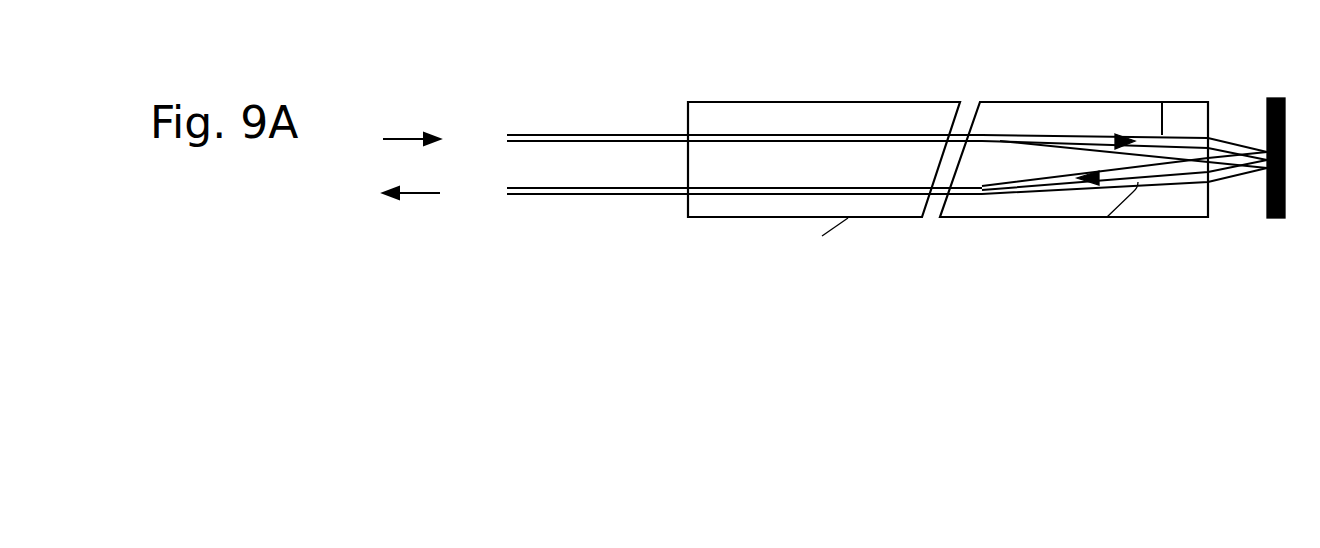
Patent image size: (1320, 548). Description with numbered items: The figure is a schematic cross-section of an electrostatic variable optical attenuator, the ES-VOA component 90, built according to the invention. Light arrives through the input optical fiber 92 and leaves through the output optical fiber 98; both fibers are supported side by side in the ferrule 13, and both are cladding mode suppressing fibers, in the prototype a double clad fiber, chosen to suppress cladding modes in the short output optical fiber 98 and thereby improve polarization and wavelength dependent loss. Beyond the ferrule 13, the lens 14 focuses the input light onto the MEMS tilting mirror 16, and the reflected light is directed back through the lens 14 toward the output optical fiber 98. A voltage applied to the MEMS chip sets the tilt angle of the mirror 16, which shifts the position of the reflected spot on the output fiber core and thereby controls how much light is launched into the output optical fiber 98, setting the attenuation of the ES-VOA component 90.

The ES-VOA component 90 is at (503, 108).
The input optical fiber 92 is at (607, 136).
The output optical fiber 98 is at (595, 193).
The ferrule 13 is at (770, 118).
The lens 14 is at (1065, 115).
The MEMS tilting mirror 16 is at (1265, 194).